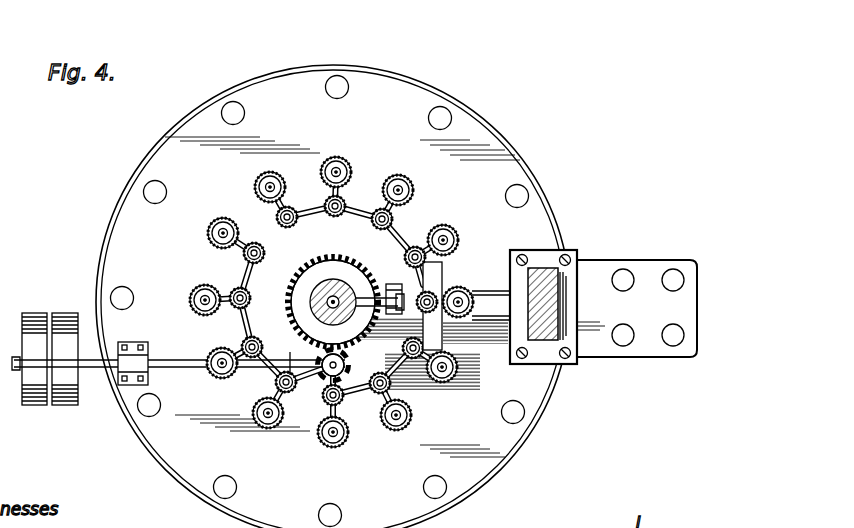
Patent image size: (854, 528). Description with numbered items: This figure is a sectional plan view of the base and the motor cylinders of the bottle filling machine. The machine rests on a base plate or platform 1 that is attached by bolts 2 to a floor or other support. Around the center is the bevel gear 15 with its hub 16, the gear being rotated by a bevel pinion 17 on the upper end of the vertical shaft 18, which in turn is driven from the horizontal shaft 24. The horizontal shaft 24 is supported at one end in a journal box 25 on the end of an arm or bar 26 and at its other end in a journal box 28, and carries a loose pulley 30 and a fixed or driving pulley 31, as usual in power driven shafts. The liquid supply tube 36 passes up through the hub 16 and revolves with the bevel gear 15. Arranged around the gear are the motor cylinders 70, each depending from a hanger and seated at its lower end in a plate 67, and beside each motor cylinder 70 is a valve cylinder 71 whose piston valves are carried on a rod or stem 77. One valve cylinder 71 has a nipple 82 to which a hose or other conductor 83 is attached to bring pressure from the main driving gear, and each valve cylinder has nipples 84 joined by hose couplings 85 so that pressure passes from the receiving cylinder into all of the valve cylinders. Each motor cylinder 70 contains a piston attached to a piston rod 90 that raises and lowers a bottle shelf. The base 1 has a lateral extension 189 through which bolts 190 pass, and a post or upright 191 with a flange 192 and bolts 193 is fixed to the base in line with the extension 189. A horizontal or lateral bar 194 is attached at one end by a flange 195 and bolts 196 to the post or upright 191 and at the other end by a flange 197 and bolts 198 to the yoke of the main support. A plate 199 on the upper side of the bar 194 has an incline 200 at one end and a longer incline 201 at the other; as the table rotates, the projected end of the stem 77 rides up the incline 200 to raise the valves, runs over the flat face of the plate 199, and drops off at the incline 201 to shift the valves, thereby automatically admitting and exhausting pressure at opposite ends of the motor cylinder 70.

The base plate or platform 1 is at (333, 296).
The bolts 2 is at (328, 93).
The bevel gear 15 is at (333, 302).
The hub 16 is at (328, 280).
The bevel pinion 17 is at (323, 398).
The shaft 18 is at (352, 385).
The horizontal shaft 24 is at (183, 368).
The journal box 25 is at (268, 378).
The arm or bar 26 is at (290, 358).
The journal box 28 is at (148, 357).
The loose pulley 30 is at (33, 347).
The fixed or driving pulley 31 is at (65, 347).
The tube 36 is at (325, 319).
The plate 67 is at (262, 248).
The motor cylinder 70 is at (393, 190).
The cylinder 71 is at (242, 343).
The rod or stem 77 is at (292, 207).
The nipple 82 is at (396, 284).
The hose or other conductor 83 is at (376, 270).
The nipple 84 is at (362, 213).
The hose or other coupling 85 is at (206, 289).
The piston rod 90 is at (270, 176).
The lateral extension 189 is at (690, 316).
The bolts 190 is at (628, 272).
The post or upright 191 is at (560, 312).
The flange 192 is at (568, 283).
The bolts 193 is at (568, 252).
The horizontal or lateral bar 194 is at (494, 305).
The flange 195 is at (520, 290).
The bolts 196 is at (520, 318).
The flange 197 is at (384, 345).
The bolts 198 is at (412, 325).
The plate 199 is at (440, 282).
The incline 200 is at (452, 235).
The incline 201 is at (458, 355).